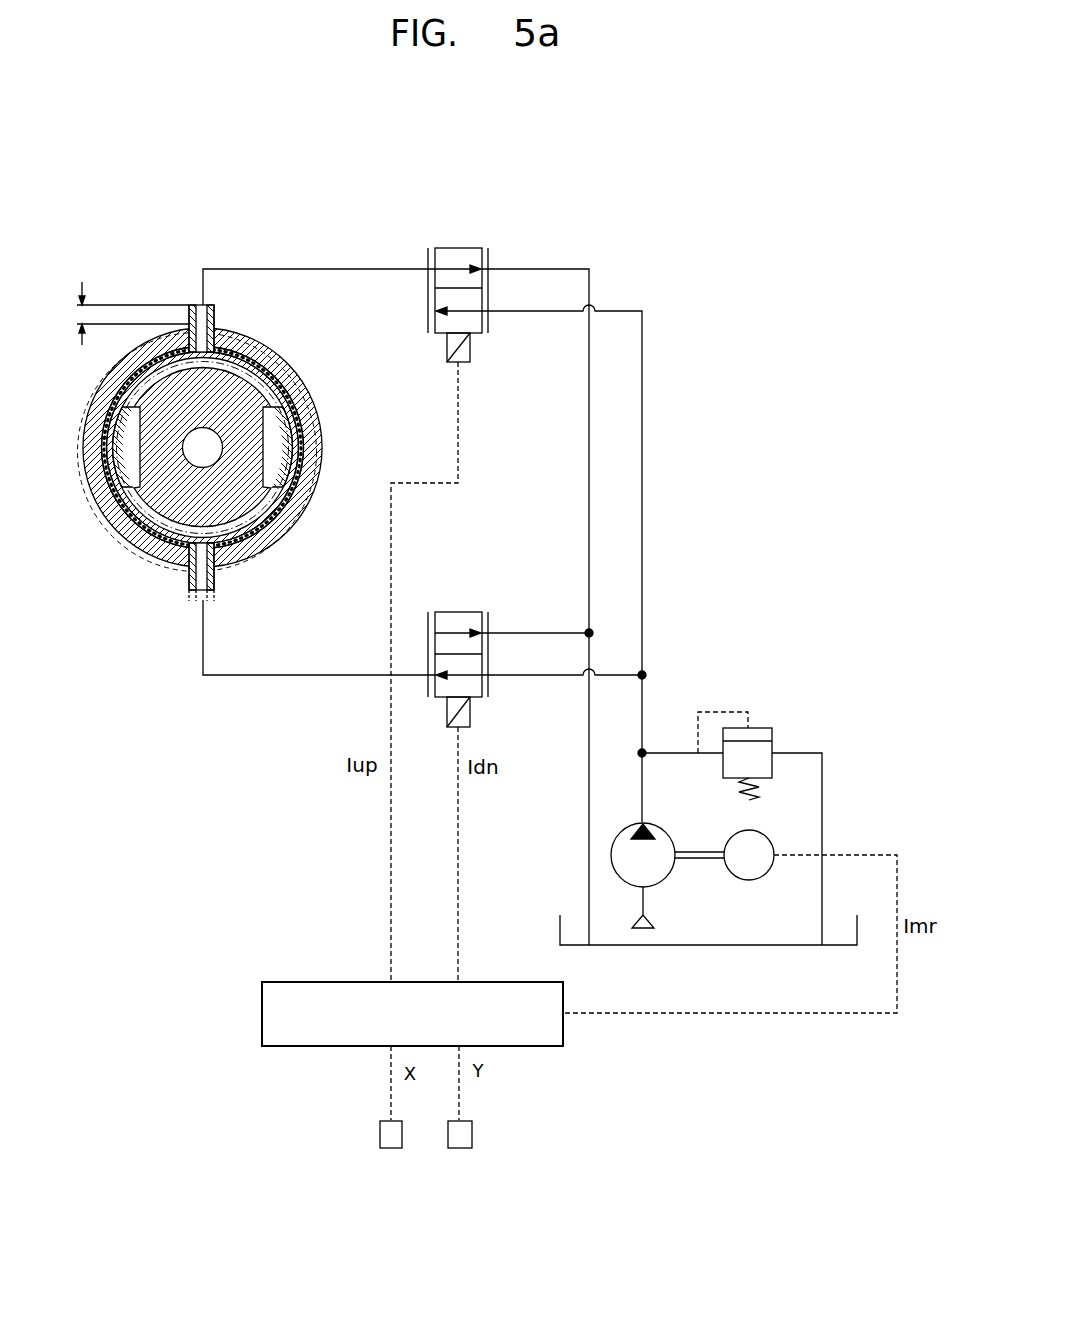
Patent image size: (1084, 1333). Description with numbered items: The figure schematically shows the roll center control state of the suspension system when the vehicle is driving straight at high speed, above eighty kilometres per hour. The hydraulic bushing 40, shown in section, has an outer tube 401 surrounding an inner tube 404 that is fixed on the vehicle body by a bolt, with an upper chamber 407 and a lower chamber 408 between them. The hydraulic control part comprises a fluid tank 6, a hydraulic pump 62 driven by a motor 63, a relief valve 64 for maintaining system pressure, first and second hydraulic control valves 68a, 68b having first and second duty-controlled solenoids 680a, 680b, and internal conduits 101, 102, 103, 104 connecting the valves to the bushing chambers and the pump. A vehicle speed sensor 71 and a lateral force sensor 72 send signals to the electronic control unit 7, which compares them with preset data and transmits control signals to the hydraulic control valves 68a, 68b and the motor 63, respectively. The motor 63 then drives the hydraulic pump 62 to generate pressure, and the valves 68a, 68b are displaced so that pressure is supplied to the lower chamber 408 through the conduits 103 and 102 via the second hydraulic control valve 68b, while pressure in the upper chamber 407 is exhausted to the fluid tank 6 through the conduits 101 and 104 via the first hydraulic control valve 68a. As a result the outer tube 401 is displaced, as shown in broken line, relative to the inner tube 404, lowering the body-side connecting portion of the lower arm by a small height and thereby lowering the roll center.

The hydraulic bushing 40 is at (146, 276).
The outer tube 401 is at (322, 432).
The inner tube 404 is at (258, 505).
The upper chamber 407 is at (262, 373).
The lower chamber 408 is at (132, 505).
The internal conduit 101 is at (292, 268).
The internal conduit 102 is at (246, 677).
The internal conduit 103 is at (644, 355).
The internal conduit 104 is at (562, 268).
The first hydraulic control valve 68a is at (474, 248).
The second hydraulic control valve 68b is at (456, 612).
The first duty-controlled solenoid 680a is at (470, 356).
The second duty-controlled solenoid 680b is at (470, 714).
The fluid tank 6 is at (760, 947).
The hydraulic pump 62 is at (660, 866).
The motor 63 is at (768, 864).
The relief valve 64 is at (752, 728).
The electronic control unit 7 is at (262, 1014).
The vehicle speed sensor 71 is at (462, 1148).
The lateral force sensor 72 is at (390, 1148).